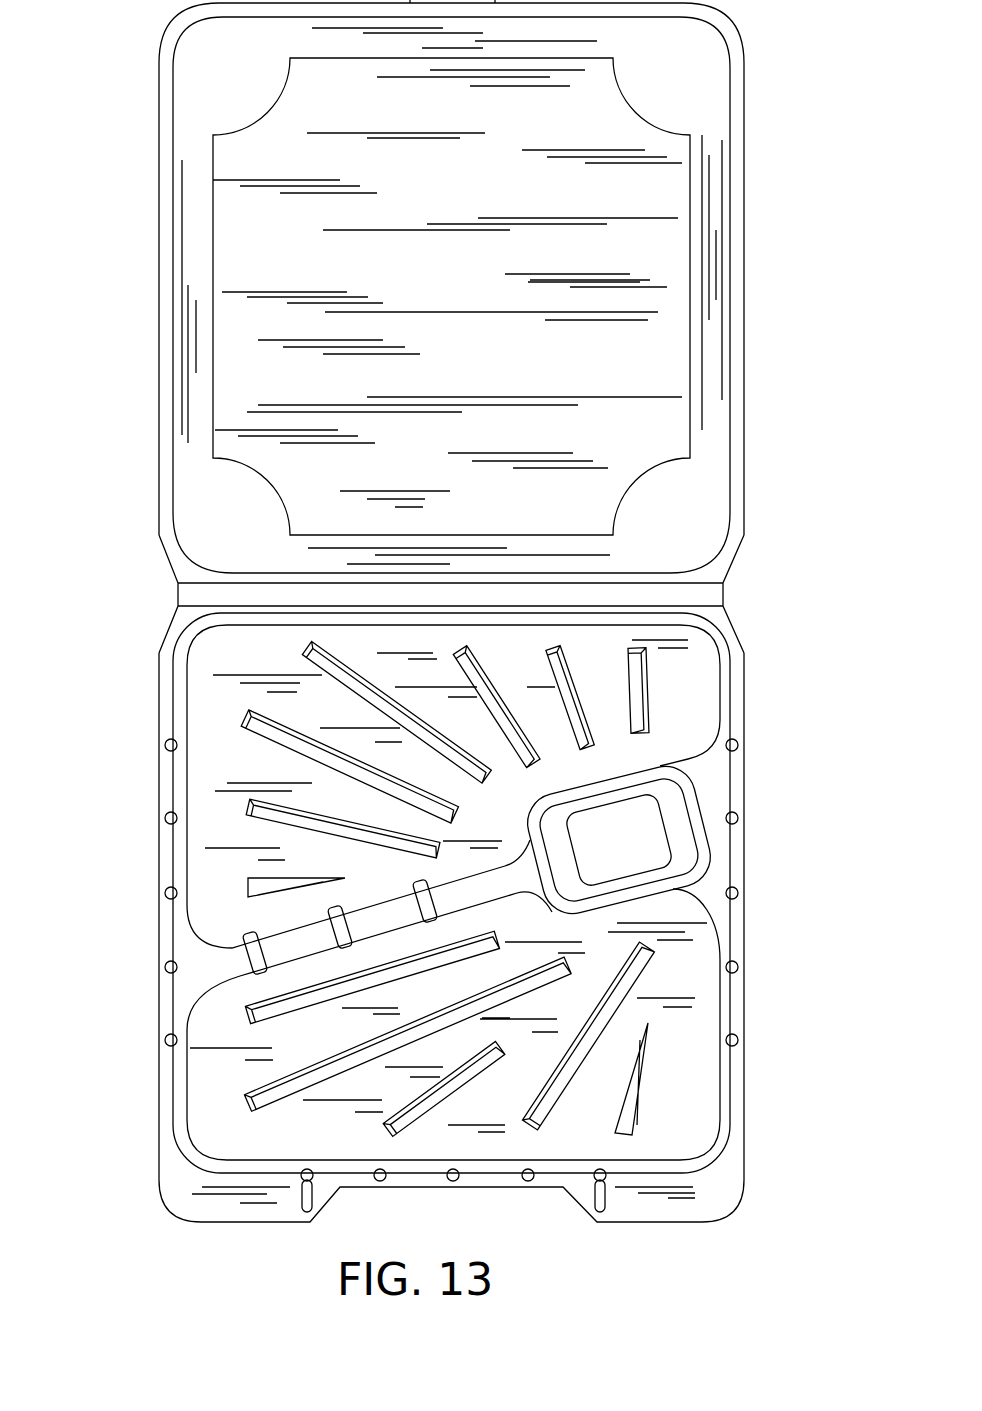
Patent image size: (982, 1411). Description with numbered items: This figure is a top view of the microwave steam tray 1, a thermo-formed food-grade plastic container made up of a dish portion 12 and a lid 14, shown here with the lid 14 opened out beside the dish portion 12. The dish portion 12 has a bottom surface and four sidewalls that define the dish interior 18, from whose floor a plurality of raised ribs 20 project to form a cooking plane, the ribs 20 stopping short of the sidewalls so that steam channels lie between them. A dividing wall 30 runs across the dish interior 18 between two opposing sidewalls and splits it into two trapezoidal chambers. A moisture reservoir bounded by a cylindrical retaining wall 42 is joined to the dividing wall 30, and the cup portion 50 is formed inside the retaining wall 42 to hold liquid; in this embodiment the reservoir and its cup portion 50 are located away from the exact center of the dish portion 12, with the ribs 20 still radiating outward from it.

The microwave steam tray 1 is at (100, 1195).
The dish portion 12 is at (682, 1122).
The lid 14 is at (670, 258).
The dish interior 18 is at (260, 1143).
The ribs 20 is at (250, 1015).
The dividing wall 30 is at (290, 940).
The retaining wall 42 is at (667, 885).
The cup portion 50 is at (637, 833).